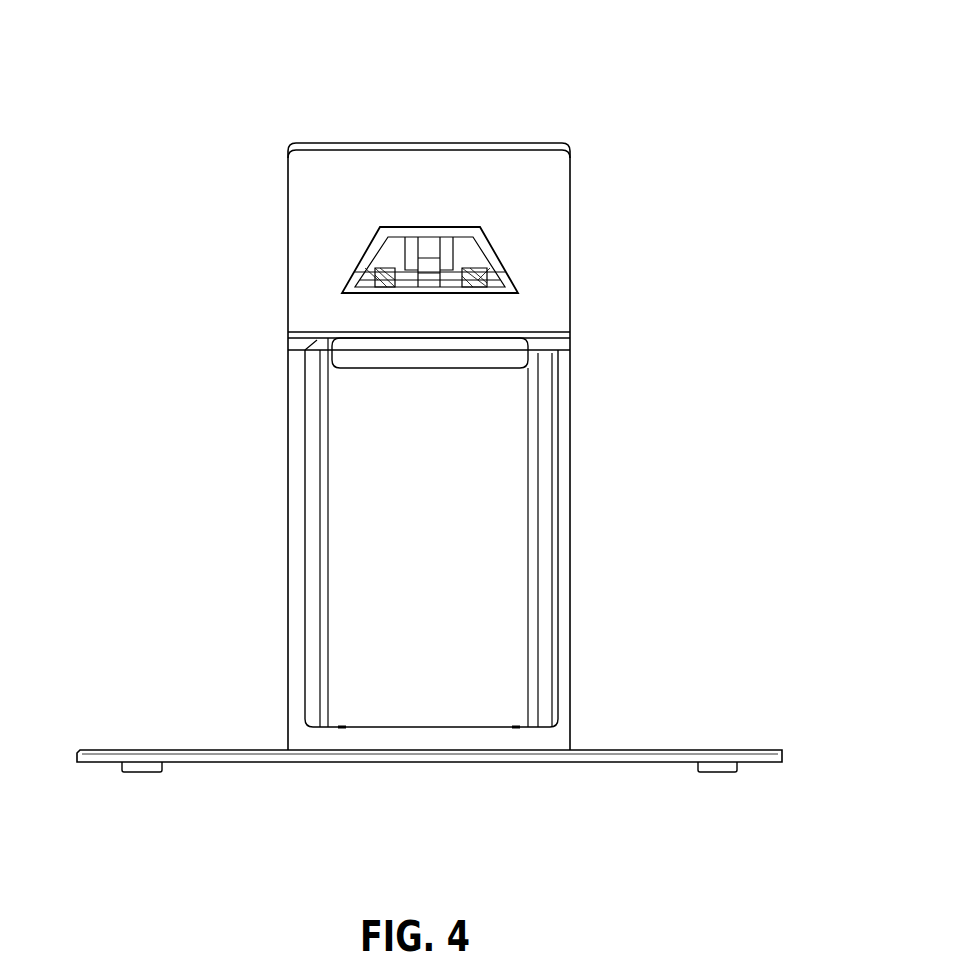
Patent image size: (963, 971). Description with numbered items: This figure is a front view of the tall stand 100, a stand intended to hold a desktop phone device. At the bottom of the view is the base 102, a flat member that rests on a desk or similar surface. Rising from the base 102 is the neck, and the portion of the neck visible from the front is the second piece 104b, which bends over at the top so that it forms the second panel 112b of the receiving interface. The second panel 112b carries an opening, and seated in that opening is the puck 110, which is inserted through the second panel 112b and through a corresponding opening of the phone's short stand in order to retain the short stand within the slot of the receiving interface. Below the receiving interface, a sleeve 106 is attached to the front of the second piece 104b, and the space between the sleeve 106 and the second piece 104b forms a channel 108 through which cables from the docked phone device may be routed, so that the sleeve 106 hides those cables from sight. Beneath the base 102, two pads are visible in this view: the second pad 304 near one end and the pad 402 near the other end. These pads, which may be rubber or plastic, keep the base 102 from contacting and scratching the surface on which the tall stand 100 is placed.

The tall stand 100 is at (138, 53).
The base 102 is at (262, 750).
The second piece 104b is at (292, 505).
The sleeve 106 is at (538, 495).
The channel 108 is at (460, 367).
The puck 110 is at (434, 227).
The second panel 112b is at (568, 202).
The second pad 304 is at (145, 772).
The pad 402 is at (720, 772).